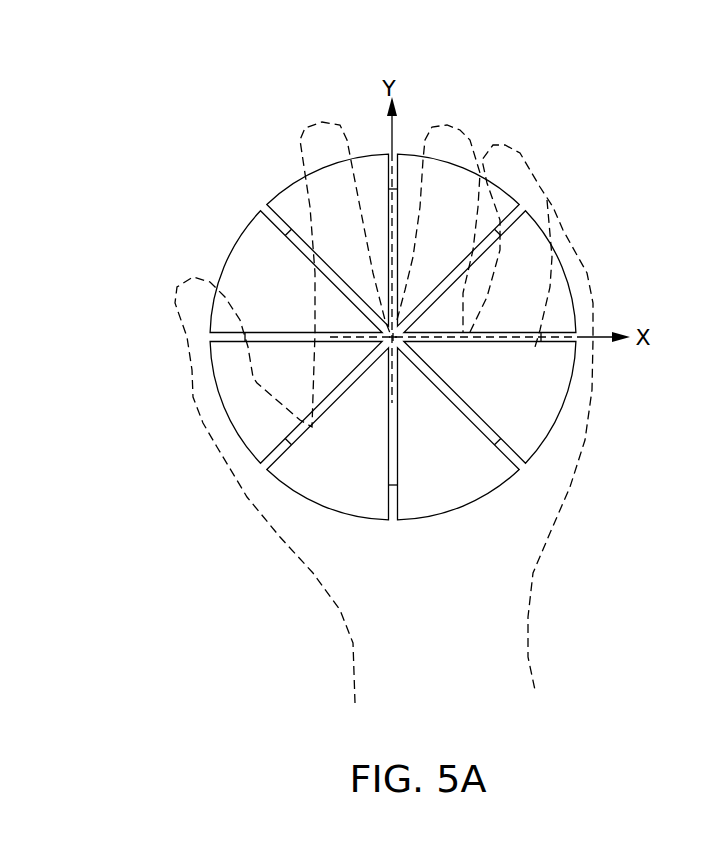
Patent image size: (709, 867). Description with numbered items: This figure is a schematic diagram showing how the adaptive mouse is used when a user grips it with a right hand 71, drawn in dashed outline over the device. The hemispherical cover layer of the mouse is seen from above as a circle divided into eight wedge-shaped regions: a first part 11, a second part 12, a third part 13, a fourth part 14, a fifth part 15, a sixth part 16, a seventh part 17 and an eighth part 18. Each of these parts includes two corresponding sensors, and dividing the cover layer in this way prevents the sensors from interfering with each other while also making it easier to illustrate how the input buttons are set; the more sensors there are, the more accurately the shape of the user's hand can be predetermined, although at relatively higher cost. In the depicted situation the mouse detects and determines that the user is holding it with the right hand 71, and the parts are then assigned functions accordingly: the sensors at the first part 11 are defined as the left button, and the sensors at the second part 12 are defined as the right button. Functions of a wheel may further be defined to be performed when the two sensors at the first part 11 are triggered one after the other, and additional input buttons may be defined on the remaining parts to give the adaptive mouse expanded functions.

The first part 11 is at (287, 191).
The second part 12 is at (423, 153).
The third part 13 is at (567, 297).
The fourth part 14 is at (552, 412).
The fifth part 15 is at (458, 500).
The sixth part 16 is at (305, 493).
The seventh part 17 is at (237, 413).
The eighth part 18 is at (240, 263).
The right hand 71 is at (362, 648).